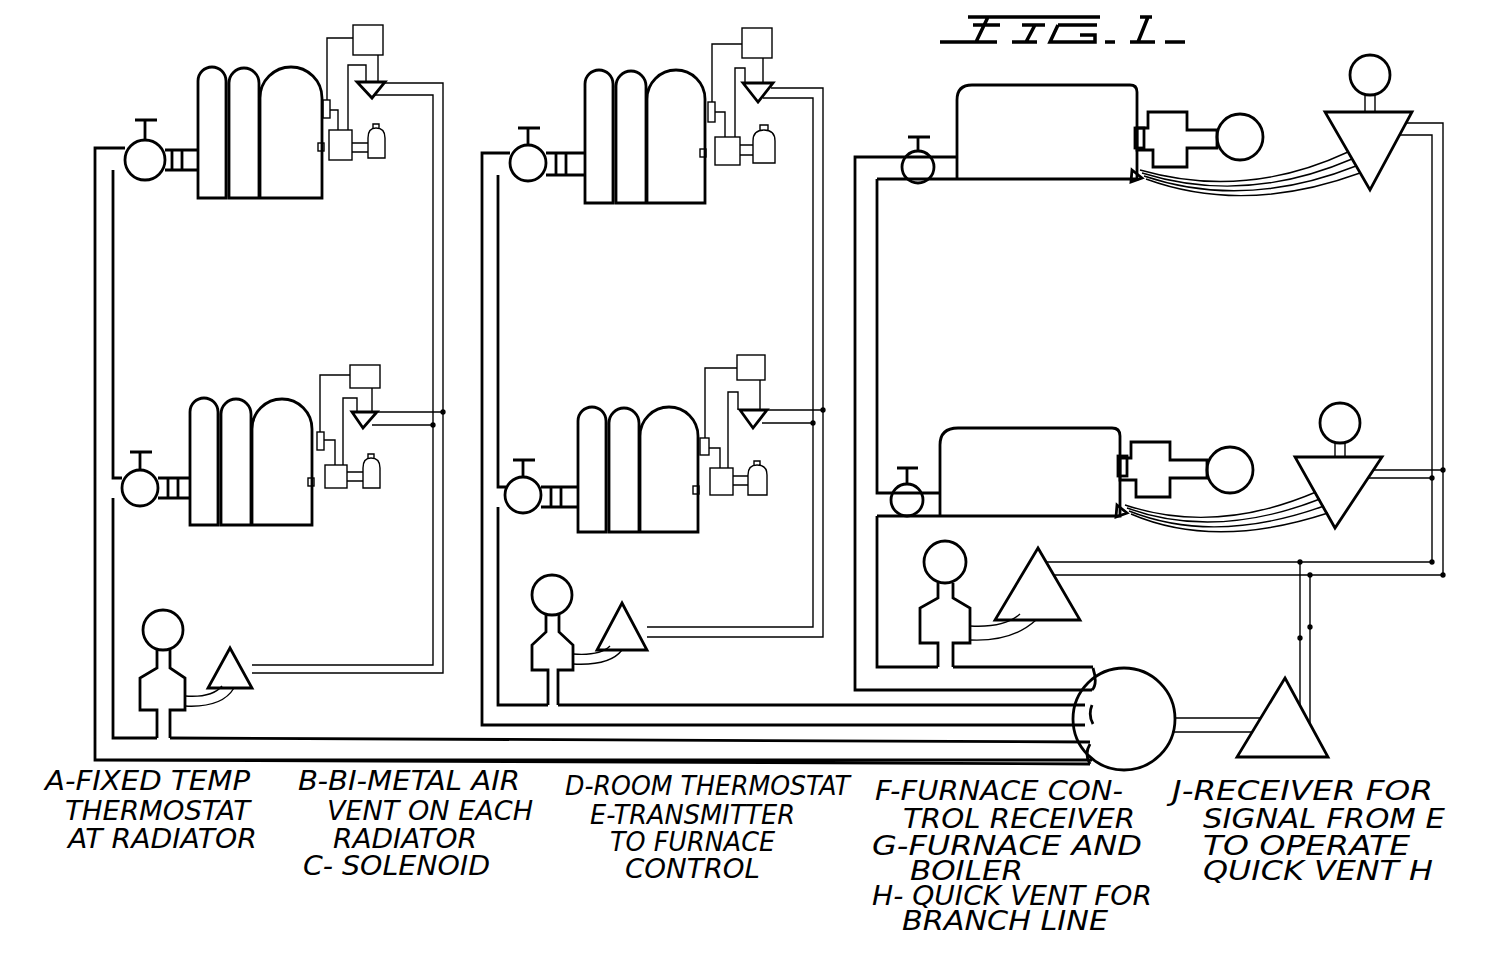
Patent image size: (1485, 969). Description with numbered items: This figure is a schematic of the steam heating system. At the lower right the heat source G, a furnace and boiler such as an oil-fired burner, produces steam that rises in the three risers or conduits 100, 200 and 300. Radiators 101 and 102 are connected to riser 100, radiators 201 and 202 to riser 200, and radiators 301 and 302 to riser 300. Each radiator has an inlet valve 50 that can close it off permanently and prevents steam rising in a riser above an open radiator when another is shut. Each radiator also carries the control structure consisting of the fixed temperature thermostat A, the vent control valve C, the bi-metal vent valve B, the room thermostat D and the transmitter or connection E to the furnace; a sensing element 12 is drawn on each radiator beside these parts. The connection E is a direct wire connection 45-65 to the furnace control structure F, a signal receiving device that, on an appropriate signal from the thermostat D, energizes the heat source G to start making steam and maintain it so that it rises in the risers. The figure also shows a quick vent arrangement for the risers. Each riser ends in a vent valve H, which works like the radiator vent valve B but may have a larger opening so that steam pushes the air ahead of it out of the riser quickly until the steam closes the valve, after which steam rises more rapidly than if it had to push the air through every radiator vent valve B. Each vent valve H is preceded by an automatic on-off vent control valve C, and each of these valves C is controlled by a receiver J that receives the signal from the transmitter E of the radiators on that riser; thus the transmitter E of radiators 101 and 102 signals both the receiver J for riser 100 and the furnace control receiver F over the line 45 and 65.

The temperature sensing element at radiator 12 is at (316, 150).
The wire connection 45 is at (447, 138).
The inlet valve 50 is at (928, 134).
The wire connection 65 is at (1300, 638).
The riser 100 is at (880, 343).
The radiator 101 is at (1067, 146).
The radiator 102 is at (1064, 484).
The riser 200 is at (500, 340).
The radiator 201 is at (700, 162).
The radiator 202 is at (693, 494).
The riser 300 is at (116, 352).
The radiator 301 is at (310, 158).
The radiator 302 is at (305, 489).
The thermostat A is at (322, 108).
The vent valve B is at (377, 158).
The vent control valve C is at (340, 160).
The room thermostat D is at (855, 241).
The connection to the furnace E is at (372, 98).
The furnace control structure F is at (1250, 717).
The heat source G is at (1124, 719).
The vent valve H is at (555, 639).
The receiver J is at (632, 627).